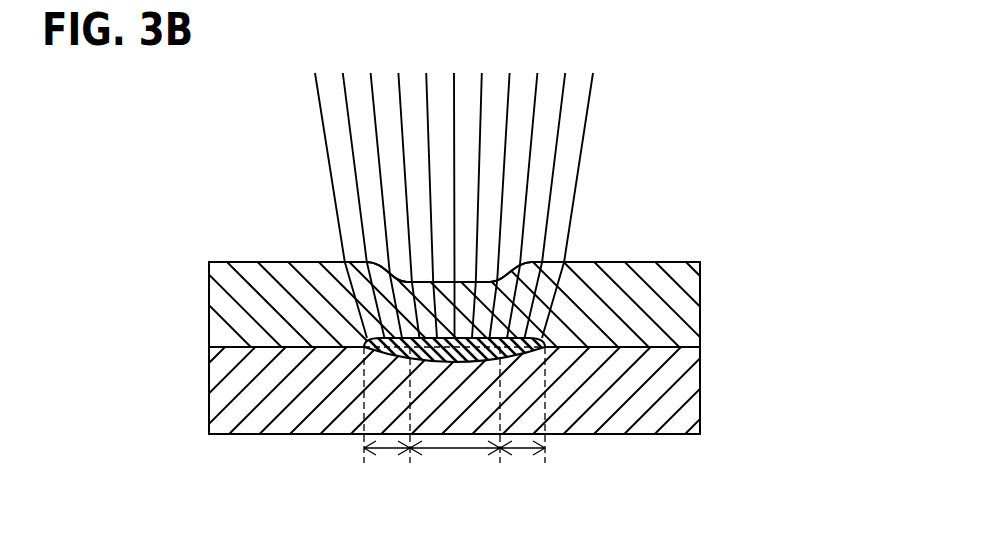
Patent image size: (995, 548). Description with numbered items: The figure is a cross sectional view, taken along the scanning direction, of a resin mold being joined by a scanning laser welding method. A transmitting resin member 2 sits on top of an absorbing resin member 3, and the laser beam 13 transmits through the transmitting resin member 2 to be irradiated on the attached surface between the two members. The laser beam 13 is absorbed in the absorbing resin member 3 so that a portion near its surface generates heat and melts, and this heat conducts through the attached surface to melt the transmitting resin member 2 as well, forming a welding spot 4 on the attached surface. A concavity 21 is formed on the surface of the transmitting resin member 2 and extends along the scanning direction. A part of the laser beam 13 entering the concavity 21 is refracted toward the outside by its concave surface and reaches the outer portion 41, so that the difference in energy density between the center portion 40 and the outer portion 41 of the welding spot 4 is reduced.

The laser beam 13 is at (328, 166).
The transmitting resin member 2 is at (209, 305).
The absorbing resin member 3 is at (209, 393).
The concavity 21 is at (466, 282).
The welding spot 4 is at (537, 338).
The center portion 40 is at (455, 420).
The outer portion 41 is at (454, 420).